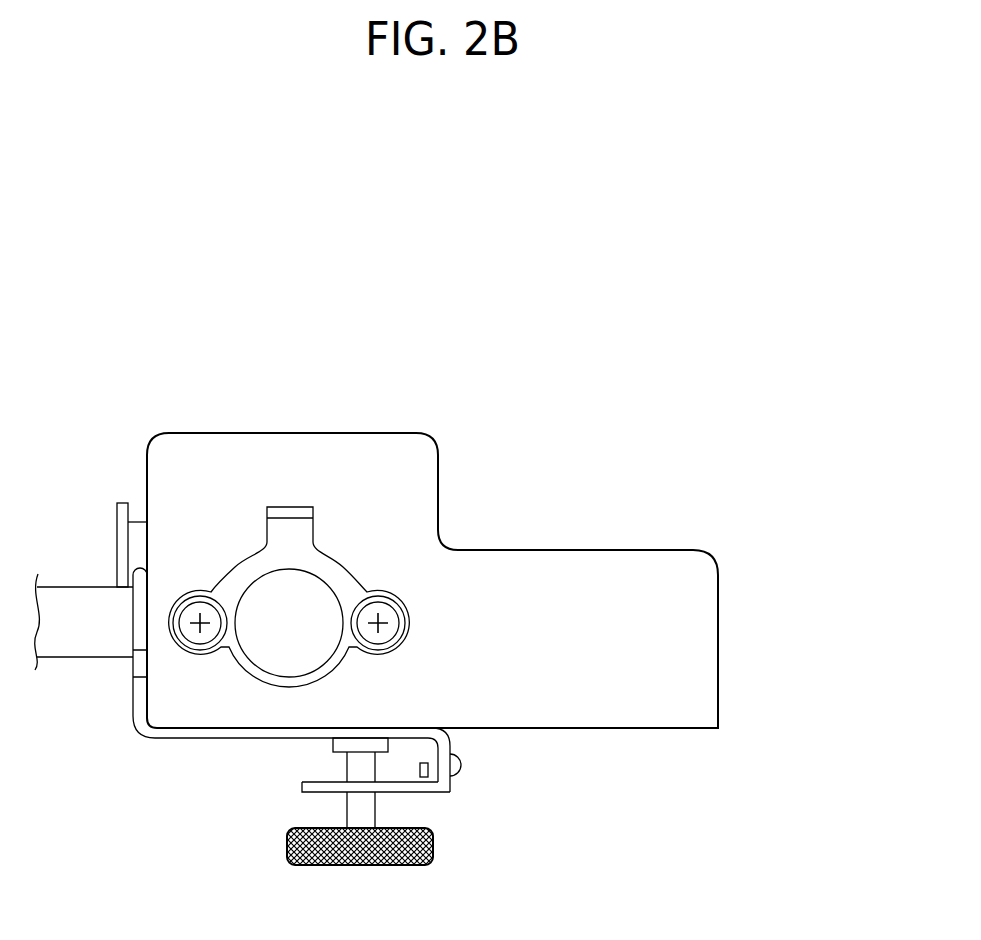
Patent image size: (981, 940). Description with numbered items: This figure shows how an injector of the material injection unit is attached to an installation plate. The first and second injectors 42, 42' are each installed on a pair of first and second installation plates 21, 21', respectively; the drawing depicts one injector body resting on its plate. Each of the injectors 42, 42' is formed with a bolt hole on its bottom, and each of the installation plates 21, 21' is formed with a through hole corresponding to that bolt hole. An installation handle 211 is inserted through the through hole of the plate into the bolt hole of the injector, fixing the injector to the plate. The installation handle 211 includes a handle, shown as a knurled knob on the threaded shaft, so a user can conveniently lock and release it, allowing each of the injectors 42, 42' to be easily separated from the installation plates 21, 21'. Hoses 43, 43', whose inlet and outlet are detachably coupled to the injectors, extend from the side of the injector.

The first injector 42 is at (505, 580).
The second injector 42' is at (505, 580).
The hose 43 is at (91, 616).
The hose 43' is at (91, 616).
The first installation plate 21 is at (358, 680).
The second installation plate 21' is at (358, 680).
The installation handle 211 is at (198, 811).